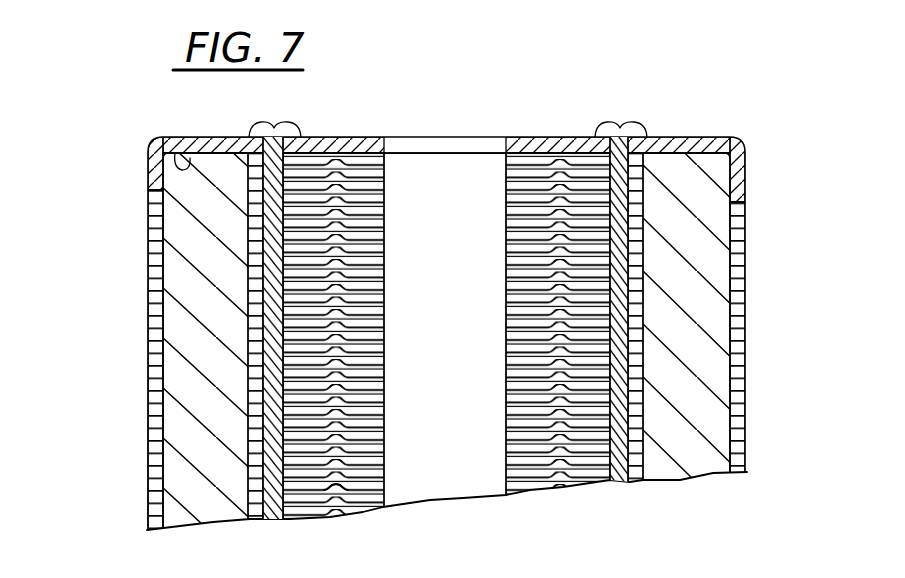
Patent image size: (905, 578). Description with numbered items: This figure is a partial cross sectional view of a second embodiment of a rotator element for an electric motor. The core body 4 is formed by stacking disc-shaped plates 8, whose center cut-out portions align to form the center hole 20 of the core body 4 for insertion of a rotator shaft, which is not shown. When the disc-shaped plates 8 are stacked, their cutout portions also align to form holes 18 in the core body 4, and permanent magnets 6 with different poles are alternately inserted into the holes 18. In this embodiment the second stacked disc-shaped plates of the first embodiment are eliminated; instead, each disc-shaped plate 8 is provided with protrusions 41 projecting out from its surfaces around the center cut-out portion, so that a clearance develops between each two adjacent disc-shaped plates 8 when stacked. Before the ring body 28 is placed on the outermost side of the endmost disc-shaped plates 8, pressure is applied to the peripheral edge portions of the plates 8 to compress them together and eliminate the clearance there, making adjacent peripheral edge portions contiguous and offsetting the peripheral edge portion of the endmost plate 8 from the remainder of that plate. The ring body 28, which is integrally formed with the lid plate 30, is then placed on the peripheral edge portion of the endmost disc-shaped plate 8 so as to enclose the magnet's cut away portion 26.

The core body 4 is at (752, 246).
The permanent magnets 6 is at (183, 398).
The disc-shaped plates 8 is at (293, 507).
The holes 18 is at (160, 316).
The center hole 20 is at (447, 170).
The magnet's cut away portion 26 is at (180, 150).
The ring body 28 is at (153, 180).
The lid plate 30 is at (350, 143).
The protrusions 41 is at (337, 483).